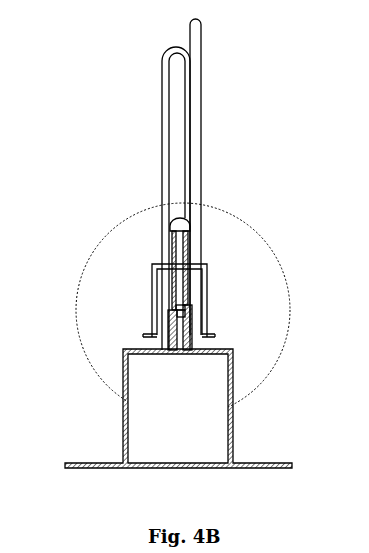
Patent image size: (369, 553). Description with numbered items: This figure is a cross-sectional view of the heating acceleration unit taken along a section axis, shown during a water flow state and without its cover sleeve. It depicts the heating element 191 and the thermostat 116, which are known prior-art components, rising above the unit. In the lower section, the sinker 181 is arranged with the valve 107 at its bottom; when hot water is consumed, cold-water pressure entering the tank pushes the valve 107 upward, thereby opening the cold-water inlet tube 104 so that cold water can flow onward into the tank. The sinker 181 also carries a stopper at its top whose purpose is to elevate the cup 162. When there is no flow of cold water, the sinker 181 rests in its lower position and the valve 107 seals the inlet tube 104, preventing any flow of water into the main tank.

The heating element 191 is at (163, 79).
The thermostat 116 is at (195, 53).
The cup 162 is at (153, 287).
The sinker 181 is at (178, 252).
The valve 107 is at (183, 310).
The cold-water inlet tube 104 is at (178, 337).